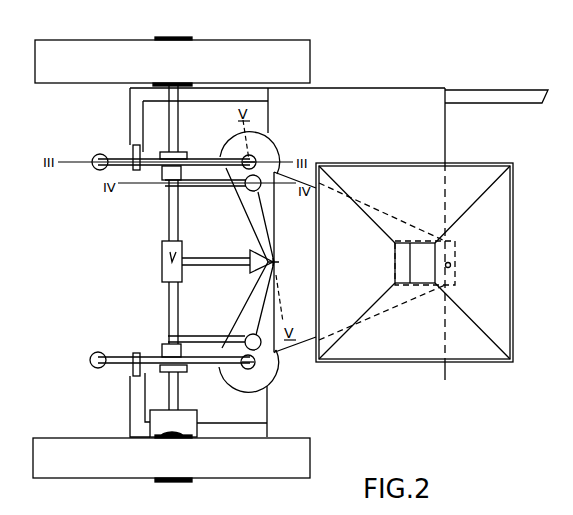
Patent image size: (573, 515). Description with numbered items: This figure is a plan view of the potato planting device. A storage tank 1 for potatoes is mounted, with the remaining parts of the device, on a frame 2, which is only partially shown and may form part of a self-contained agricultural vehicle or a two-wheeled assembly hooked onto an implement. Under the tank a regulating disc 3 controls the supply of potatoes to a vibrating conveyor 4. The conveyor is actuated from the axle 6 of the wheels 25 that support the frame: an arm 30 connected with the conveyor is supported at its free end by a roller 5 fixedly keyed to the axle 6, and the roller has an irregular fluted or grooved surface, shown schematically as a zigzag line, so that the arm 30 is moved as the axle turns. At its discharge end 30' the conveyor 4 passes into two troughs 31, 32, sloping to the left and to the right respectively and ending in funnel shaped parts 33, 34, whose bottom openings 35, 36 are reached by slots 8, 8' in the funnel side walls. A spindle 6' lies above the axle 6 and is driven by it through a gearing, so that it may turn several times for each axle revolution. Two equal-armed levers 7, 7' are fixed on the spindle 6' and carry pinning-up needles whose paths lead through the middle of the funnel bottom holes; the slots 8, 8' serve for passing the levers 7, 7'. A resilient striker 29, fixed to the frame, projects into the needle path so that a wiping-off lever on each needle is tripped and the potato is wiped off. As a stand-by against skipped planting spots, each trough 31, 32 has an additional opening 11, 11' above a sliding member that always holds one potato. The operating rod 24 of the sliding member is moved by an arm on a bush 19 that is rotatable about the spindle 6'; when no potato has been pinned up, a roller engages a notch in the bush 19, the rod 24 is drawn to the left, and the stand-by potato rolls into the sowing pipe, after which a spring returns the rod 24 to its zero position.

The storage tank 1 is at (500, 251).
The frame 2 is at (498, 99).
The regulating disc 3 is at (424, 291).
The vibrating conveyor 4 is at (303, 343).
The roller 5 is at (162, 255).
The axle 6 is at (181, 260).
The spindle 6' is at (164, 313).
The lever 7 is at (171, 179).
The lever 7' is at (170, 351).
The slot 8 is at (231, 154).
The slot 8' is at (230, 373).
The additional opening 11 is at (248, 215).
The additional opening 11' is at (247, 306).
The bush 19 is at (165, 183).
The operating rod 24 is at (200, 186).
The wheels 25 is at (286, 50).
The resilient striker 29 is at (130, 152).
The arm 30 is at (227, 258).
The discharge end 30' is at (287, 252).
The trough 31 is at (275, 214).
The trough 32 is at (272, 358).
The funnel shaped part 33 is at (267, 137).
The funnel shaped part 34 is at (246, 388).
The bottom opening 35 is at (258, 142).
The bottom opening 36 is at (266, 386).